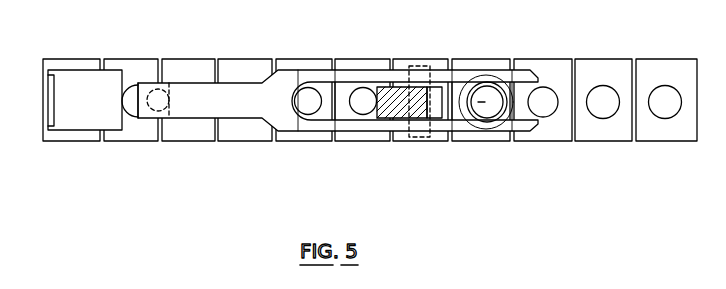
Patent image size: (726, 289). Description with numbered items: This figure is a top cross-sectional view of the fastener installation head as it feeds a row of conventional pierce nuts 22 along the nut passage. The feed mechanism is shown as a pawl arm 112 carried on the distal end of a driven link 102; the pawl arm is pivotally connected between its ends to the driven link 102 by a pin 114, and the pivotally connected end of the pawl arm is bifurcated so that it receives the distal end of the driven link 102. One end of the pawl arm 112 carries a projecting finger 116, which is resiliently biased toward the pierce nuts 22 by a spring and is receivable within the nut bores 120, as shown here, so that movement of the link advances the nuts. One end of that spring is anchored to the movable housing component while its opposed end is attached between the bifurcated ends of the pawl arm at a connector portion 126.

The pierce nuts 22 is at (152, 135).
The driven link 102 is at (401, 90).
The bar / actuating rod 112 is at (240, 110).
The pin 114 is at (422, 136).
The projecting finger 116 is at (153, 94).
The nut bores 120 is at (600, 106).
The connector portion 126 is at (492, 111).